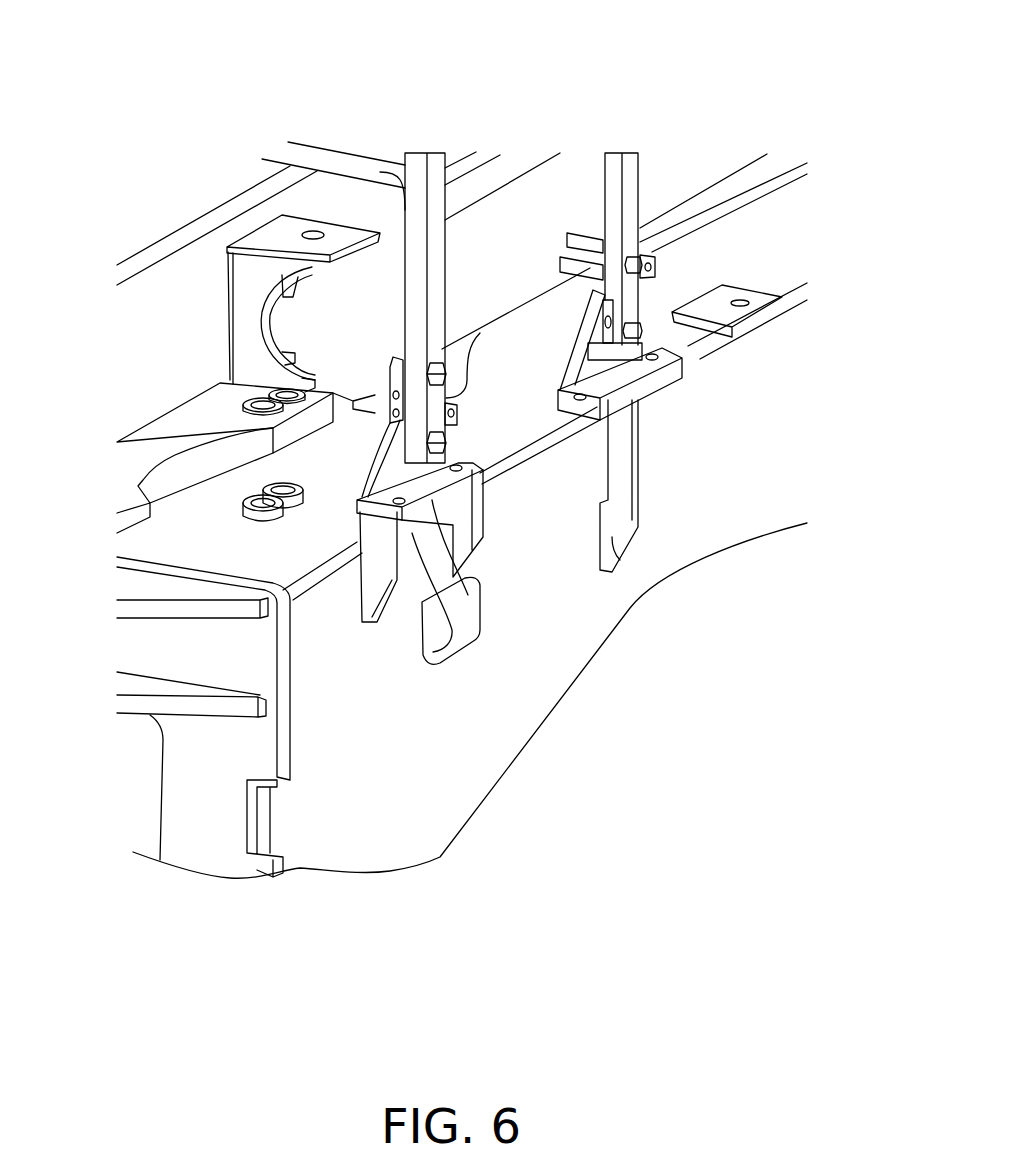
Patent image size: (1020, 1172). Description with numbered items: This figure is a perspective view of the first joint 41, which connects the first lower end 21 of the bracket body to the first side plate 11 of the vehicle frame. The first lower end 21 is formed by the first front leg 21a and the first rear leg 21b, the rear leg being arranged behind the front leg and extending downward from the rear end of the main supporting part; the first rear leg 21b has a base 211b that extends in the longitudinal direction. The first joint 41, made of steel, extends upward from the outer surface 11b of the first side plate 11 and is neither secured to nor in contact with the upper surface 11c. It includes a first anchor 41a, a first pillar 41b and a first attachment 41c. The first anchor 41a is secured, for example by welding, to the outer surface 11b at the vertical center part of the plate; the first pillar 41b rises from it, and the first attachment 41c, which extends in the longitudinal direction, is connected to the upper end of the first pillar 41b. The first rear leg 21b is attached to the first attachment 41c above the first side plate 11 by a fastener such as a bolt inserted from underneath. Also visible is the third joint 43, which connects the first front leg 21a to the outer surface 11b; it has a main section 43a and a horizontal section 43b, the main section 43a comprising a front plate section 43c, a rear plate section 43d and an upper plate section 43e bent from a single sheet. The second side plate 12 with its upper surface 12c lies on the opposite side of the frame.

The first side plate 11 is at (567, 705).
The outer surface 11b is at (493, 700).
The upper surface 11c is at (777, 318).
The second side plate 12 is at (150, 231).
The upper surface 12c is at (232, 213).
The first lower end 21 is at (658, 57).
The first front leg 21a is at (447, 348).
The first rear leg 21b is at (633, 289).
The base 211b is at (655, 338).
The first joint 41 is at (648, 488).
The first anchor 41a is at (620, 562).
The first pillar 41b is at (623, 448).
The first attachment 41c is at (663, 393).
The third joint 43 is at (483, 557).
The main section 43a is at (360, 573).
The horizontal section 43b is at (433, 655).
The front plate section 43c is at (372, 578).
The rear plate section 43d is at (483, 512).
The upper plate section 43e is at (478, 607).